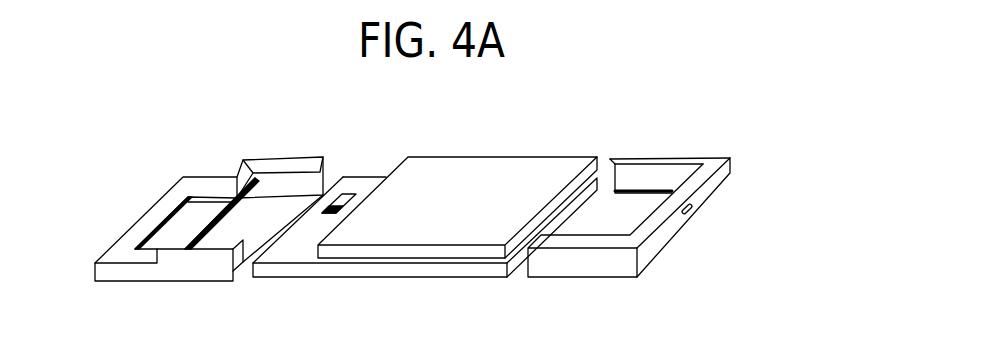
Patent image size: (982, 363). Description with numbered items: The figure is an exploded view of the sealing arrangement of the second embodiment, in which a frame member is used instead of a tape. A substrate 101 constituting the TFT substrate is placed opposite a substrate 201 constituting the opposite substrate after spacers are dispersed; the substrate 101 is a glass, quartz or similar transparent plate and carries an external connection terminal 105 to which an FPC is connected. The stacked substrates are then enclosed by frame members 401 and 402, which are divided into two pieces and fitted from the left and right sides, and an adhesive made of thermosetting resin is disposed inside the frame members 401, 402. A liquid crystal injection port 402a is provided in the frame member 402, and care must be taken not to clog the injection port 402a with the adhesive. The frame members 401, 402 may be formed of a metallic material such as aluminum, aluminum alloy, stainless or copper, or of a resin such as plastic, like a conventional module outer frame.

The frame member 401 is at (218, 133).
The frame member 402 is at (647, 155).
The substrate 101 is at (327, 278).
The substrate 201 is at (438, 182).
The external connection terminal 105 is at (350, 175).
The liquid crystal injection port 402a is at (690, 212).